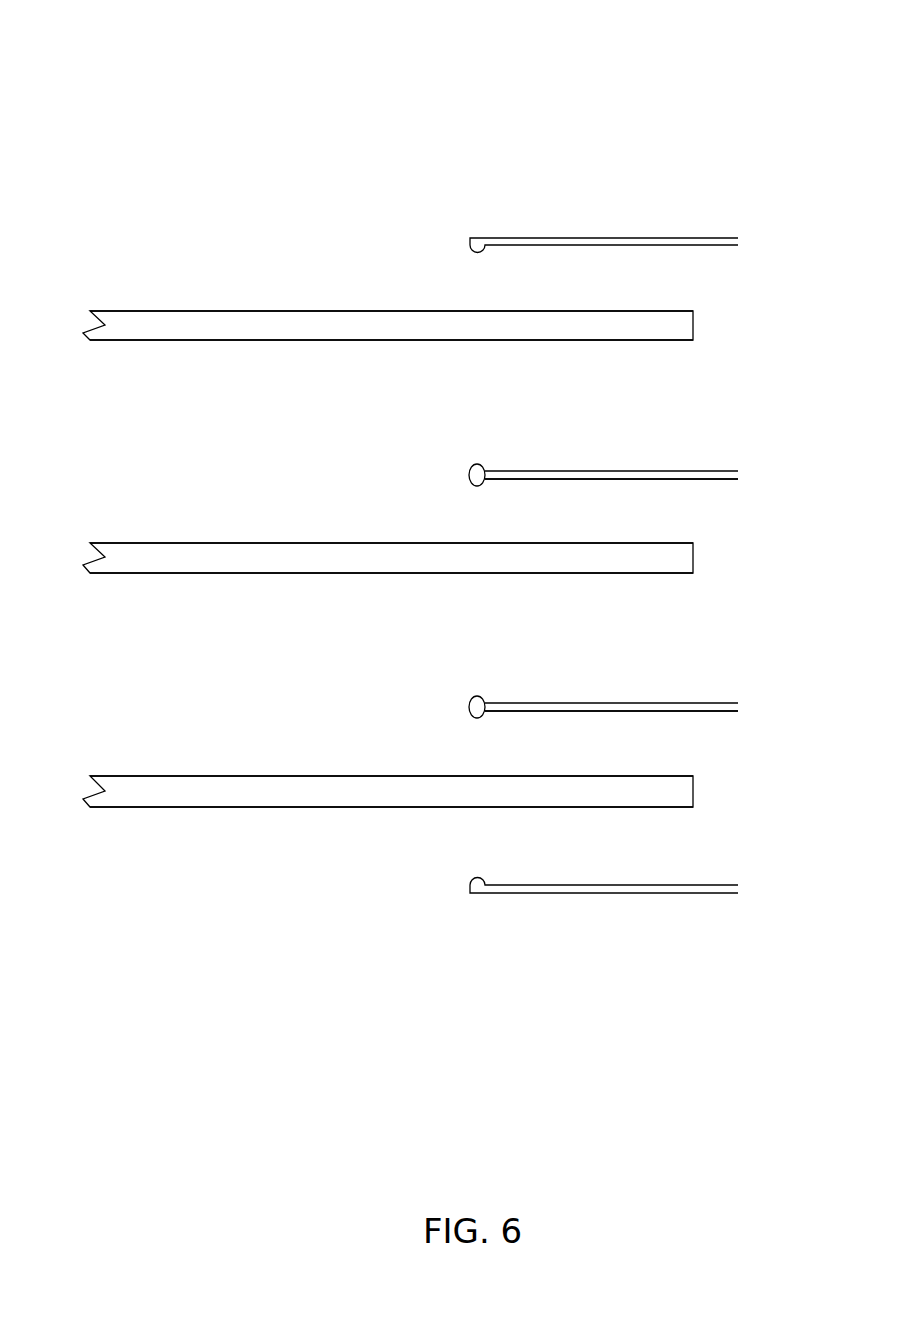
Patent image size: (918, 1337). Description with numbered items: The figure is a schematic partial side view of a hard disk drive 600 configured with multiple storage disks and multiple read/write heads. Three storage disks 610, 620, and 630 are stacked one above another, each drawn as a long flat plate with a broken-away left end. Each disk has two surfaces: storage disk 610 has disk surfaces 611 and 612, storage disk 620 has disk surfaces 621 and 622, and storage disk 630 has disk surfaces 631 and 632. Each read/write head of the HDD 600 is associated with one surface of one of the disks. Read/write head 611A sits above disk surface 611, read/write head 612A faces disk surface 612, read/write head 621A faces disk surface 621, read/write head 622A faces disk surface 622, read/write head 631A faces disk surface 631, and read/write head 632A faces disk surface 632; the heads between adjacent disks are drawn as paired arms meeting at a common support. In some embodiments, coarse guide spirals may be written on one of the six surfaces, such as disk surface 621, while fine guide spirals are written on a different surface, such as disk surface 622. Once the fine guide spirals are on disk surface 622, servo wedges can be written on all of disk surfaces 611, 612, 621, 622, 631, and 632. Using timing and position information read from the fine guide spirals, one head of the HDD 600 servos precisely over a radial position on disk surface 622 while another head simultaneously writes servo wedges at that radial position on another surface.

The hard disk drive 600 is at (122, 48).
The storage disk 610 is at (693, 325).
The disk surface 611 is at (133, 310).
The disk surface 612 is at (135, 341).
The read/write head 611A is at (478, 253).
The read/write head 612A is at (477, 464).
The storage disk 620 is at (693, 558).
The disk surface 621 is at (133, 542).
The disk surface 622 is at (135, 574).
The read/write head 621A is at (477, 486).
The read/write head 622A is at (477, 696).
The storage disk 630 is at (693, 792).
The disk surface 631 is at (133, 775).
The disk surface 632 is at (135, 808).
The read/write head 631A is at (477, 718).
The read/write head 632A is at (476, 877).